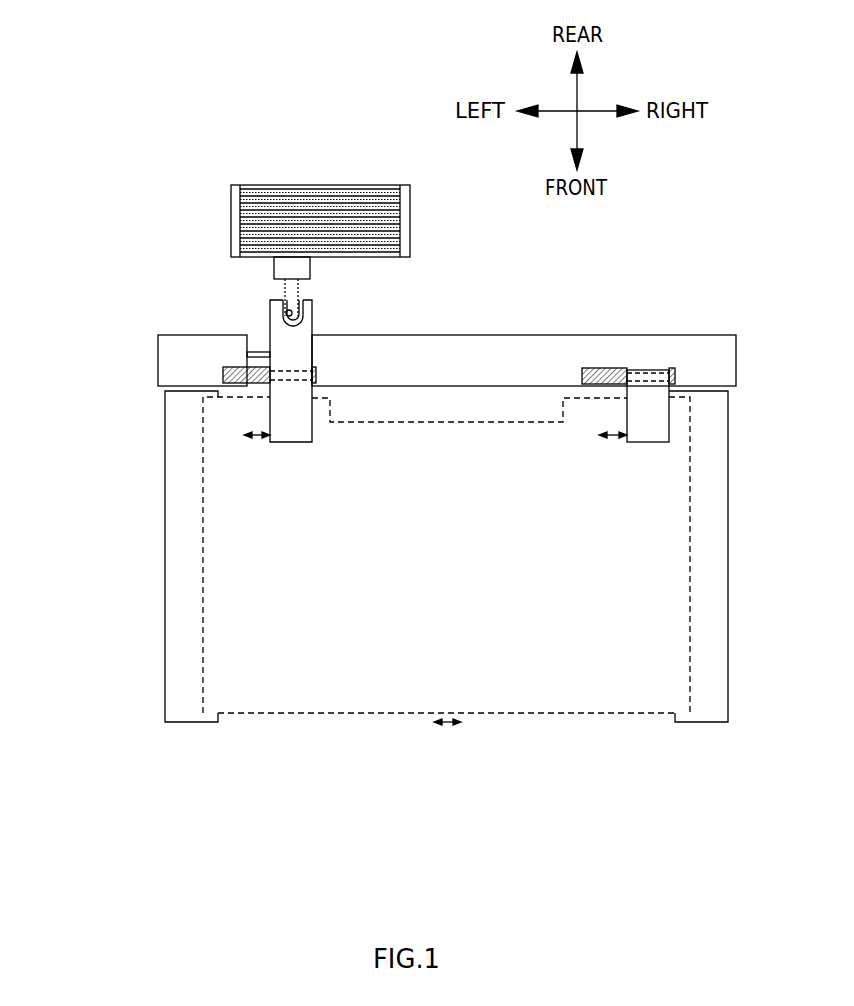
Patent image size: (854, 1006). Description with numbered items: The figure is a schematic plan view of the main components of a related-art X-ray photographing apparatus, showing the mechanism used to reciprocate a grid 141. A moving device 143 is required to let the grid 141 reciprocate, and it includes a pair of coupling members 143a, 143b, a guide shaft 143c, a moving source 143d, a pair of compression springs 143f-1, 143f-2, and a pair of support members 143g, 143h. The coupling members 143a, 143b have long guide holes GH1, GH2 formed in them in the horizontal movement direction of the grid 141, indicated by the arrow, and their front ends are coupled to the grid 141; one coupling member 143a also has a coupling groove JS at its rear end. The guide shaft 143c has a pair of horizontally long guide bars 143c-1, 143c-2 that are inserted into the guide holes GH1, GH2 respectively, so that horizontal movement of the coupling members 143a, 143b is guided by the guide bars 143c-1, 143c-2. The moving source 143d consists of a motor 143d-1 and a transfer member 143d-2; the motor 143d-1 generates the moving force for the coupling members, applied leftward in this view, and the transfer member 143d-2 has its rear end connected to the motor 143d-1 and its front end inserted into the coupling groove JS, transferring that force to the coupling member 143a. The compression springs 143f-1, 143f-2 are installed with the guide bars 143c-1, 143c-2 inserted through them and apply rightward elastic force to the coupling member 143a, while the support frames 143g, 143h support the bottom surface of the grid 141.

The grid 141 is at (543, 715).
The moving device 143 is at (188, 168).
The coupling member 143a is at (270, 333).
The coupling member 143b is at (670, 419).
The guide shaft 143c is at (493, 335).
The guide bar 143c-1 is at (316, 360).
The guide bar 143c-2 is at (669, 370).
The moving source 143d is at (92, 231).
The motor 143d-1 is at (231, 230).
The transfer member 143d-2 is at (274, 266).
The compression spring 143f-1 is at (233, 386).
The compression spring 143f-2 is at (592, 368).
The support frame 143g is at (212, 722).
The support frame 143h is at (690, 722).
The coupling groove JS is at (268, 320).
The guide hole GH1 is at (265, 422).
The guide hole GH2 is at (670, 405).